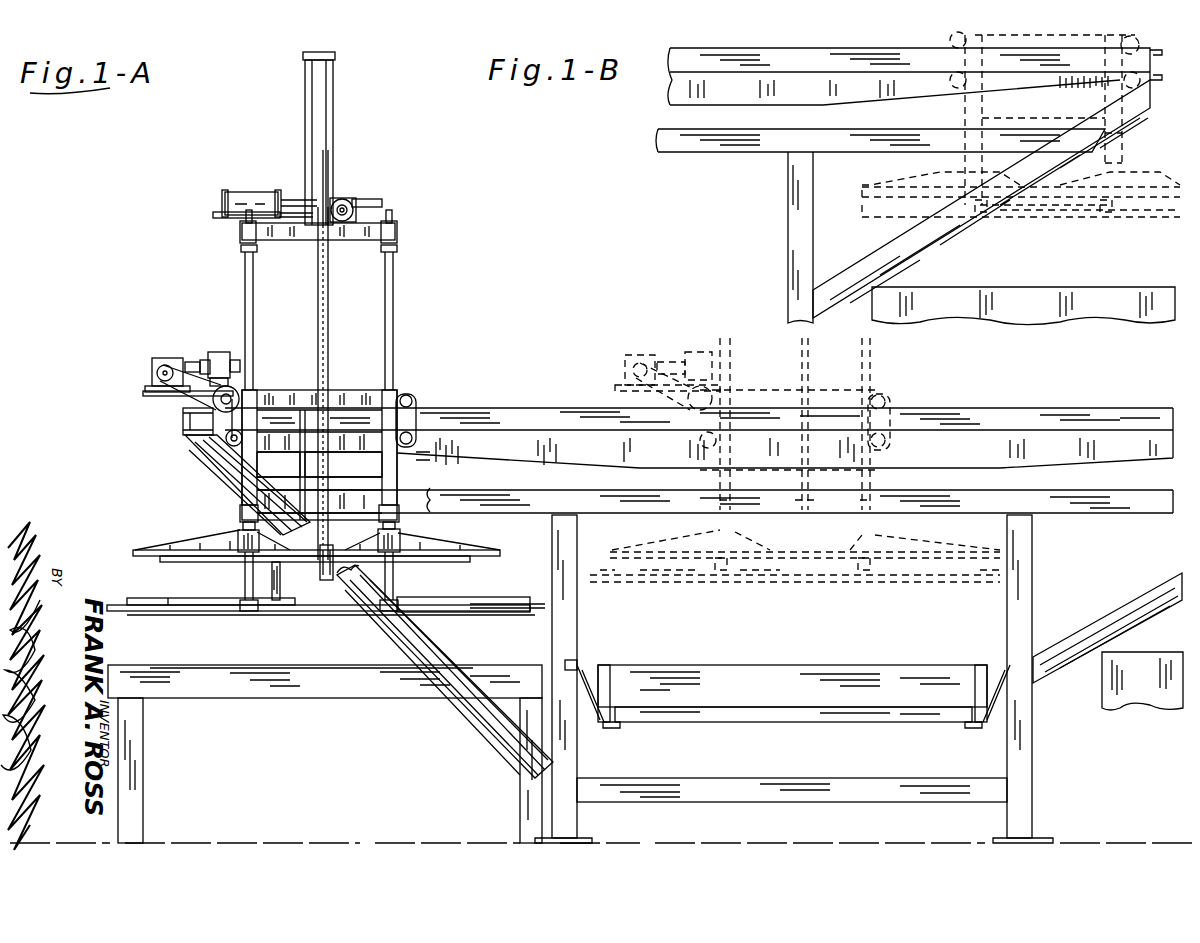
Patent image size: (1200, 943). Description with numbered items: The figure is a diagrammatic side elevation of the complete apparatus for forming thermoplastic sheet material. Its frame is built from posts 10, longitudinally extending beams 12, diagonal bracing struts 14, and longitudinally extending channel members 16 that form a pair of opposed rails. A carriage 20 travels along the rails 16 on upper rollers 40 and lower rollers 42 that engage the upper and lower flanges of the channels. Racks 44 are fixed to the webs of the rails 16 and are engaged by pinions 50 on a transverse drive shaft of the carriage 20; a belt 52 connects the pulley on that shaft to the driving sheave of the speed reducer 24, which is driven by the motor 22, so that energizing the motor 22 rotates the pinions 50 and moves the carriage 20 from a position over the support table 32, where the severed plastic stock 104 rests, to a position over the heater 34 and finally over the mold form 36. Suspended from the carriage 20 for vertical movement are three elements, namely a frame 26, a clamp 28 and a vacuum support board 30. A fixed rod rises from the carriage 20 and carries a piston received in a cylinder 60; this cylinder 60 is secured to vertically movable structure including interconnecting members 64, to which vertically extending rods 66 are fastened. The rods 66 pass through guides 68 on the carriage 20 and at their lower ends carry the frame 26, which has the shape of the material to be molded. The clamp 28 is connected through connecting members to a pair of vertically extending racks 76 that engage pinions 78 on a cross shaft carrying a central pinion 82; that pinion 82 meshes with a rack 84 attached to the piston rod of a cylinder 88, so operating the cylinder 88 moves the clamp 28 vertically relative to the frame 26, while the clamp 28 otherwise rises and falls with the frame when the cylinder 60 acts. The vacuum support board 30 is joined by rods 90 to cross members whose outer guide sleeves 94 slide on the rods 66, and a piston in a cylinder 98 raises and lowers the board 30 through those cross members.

In FIG. 1A, the posts 10 is at (578, 631).
In FIG. 1B, the posts 10 is at (788, 226).
In FIG. 1A, the longitudinally extending beams 12 is at (505, 484).
In FIG. 1B, the longitudinally extending beams 12 is at (753, 133).
In FIG. 1A, the diagonal bracing struts 14 is at (433, 655).
In FIG. 1B, the diagonal bracing struts 14 is at (948, 226).
In FIG. 1A, the longitudinally extending channel members 16 is at (503, 408).
In FIG. 1B, the longitudinally extending channel members 16 is at (818, 48).
In FIG. 1A, the carriage 20 is at (354, 390).
In FIG. 1B, the carriage 20 is at (945, 40).
In FIG. 1A, the motor 22 is at (218, 352).
In FIG. 1A, the speed reducer 24 is at (155, 358).
In FIG. 1A, the frame 26 is at (135, 588).
In FIG. 1B, the frame 26 is at (866, 219).
In FIG. 1A, the clamp 28 is at (135, 550).
In FIG. 1B, the clamp 28 is at (862, 185).
In FIG. 1A, the vacuum support board 30 is at (198, 596).
In FIG. 1A, the support table 32 is at (167, 698).
In FIG. 1A, the heater 34 is at (946, 667).
In FIG. 1A, the mold form 36 is at (1162, 642).
In FIG. 1B, the mold form 36 is at (1141, 287).
In FIG. 1A, the upper rollers 40 is at (410, 392).
In FIG. 1A, the lower rollers 42 is at (410, 460).
In FIG. 1A, the racks 44 is at (185, 452).
In FIG. 1A, the pinions 50 is at (218, 406).
In FIG. 1A, the belt 52 is at (212, 393).
In FIG. 1A, the cylinder 60 is at (301, 85).
In FIG. 1A, the interconnecting members 64 is at (268, 240).
In FIG. 1A, the vertically extending rods 66 is at (254, 290).
In FIG. 1A, the guides 68 is at (381, 467).
In FIG. 1A, the vertically extending racks 76 is at (334, 166).
In FIG. 1A, the pinions 78 is at (346, 200).
In FIG. 1A, the central pinion 82 is at (332, 240).
In FIG. 1A, the rack 84 is at (378, 200).
In FIG. 1A, the cylinder 88 is at (242, 192).
In FIG. 1A, the rods 90 is at (281, 565).
In FIG. 1A, the guide sleeves 94 is at (240, 512).
In FIG. 1A, the cylinder 98 is at (306, 462).
In FIG. 1A, the severed plastic stock 104 is at (282, 665).
In FIG. 1B, the severed plastic stock 104 is at (1040, 222).